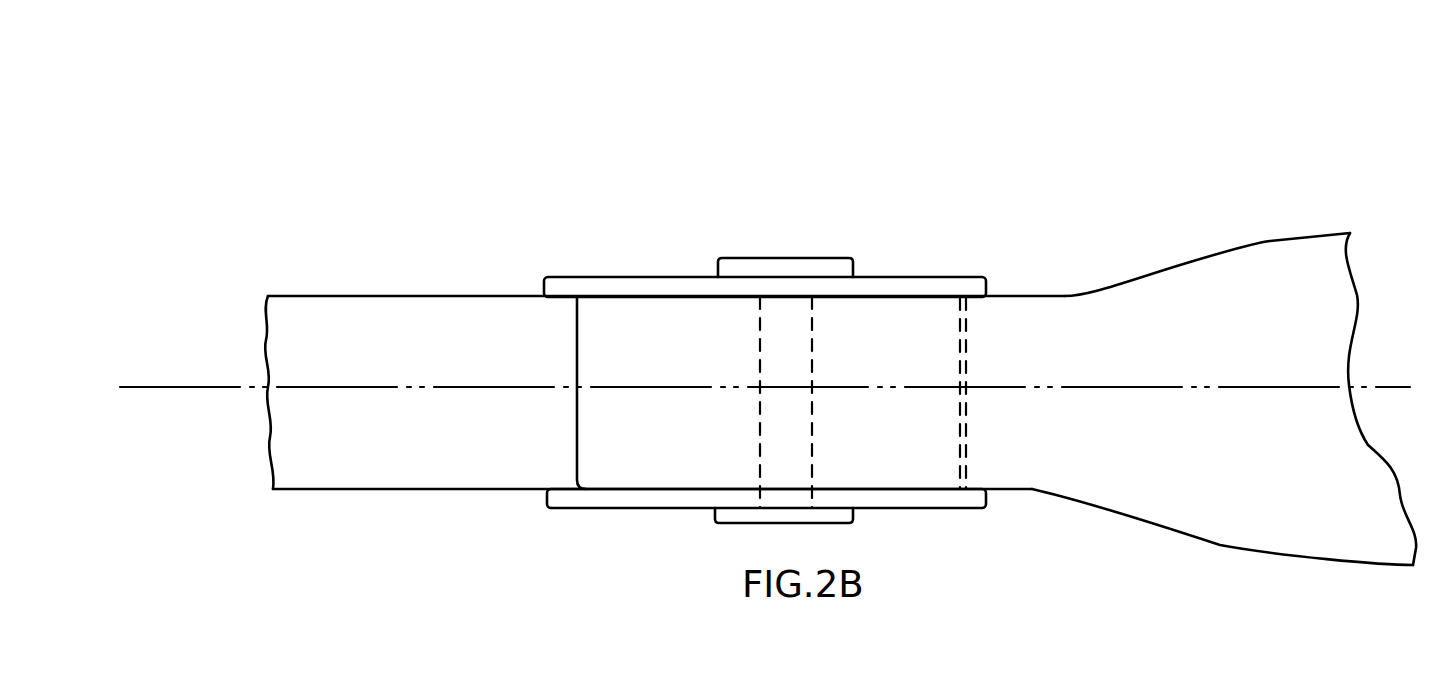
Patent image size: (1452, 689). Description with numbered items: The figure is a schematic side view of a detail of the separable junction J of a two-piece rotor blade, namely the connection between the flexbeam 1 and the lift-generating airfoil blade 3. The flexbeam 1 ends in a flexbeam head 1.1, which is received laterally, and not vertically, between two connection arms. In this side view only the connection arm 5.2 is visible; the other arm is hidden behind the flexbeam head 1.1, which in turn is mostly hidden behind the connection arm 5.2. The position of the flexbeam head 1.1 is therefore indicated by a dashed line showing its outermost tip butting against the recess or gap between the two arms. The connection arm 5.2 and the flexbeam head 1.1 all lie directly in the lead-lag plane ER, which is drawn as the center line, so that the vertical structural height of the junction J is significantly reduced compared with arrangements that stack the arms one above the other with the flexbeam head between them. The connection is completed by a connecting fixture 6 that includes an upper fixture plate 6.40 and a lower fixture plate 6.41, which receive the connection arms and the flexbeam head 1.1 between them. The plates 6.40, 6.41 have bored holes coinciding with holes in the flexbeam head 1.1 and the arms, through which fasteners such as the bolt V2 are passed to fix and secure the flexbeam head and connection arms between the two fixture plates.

The flexbeam 1 is at (313, 312).
The flexbeam head 1.1 is at (960, 330).
The airfoil blade 3 is at (1326, 255).
The connection arm 5.2 is at (598, 465).
The connecting fixture 6 is at (908, 200).
The upper fixture plate 6.40 is at (588, 287).
The lower fixture plate 6.41 is at (623, 498).
The bolt V2 is at (808, 268).
The junction J is at (813, 90).
The lead-lag plane ER is at (1386, 388).